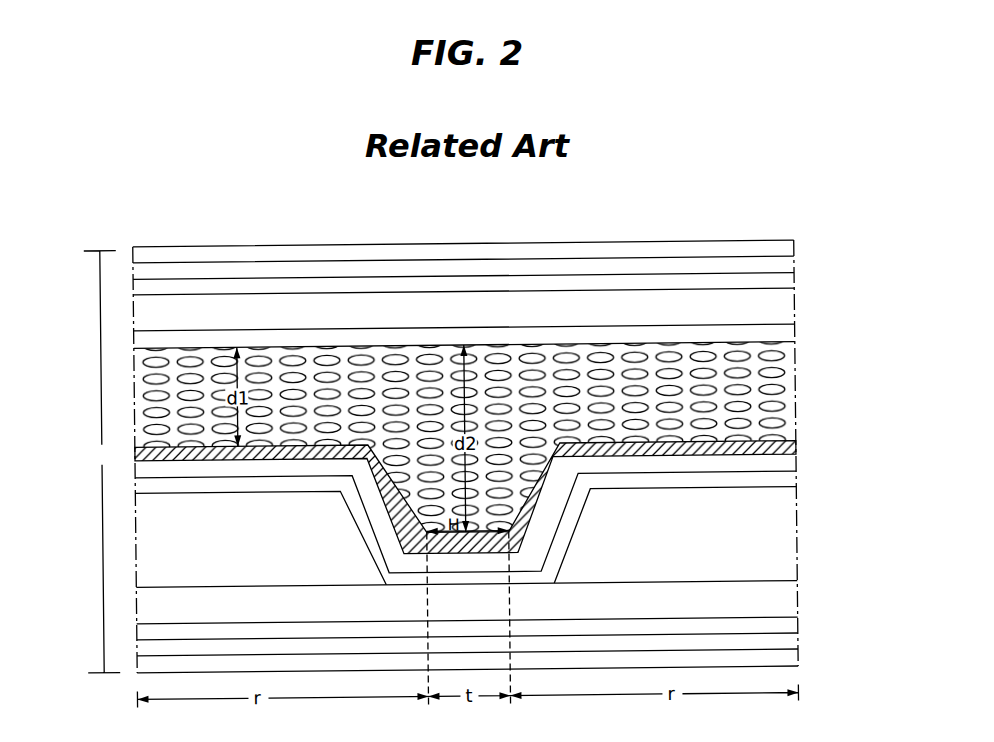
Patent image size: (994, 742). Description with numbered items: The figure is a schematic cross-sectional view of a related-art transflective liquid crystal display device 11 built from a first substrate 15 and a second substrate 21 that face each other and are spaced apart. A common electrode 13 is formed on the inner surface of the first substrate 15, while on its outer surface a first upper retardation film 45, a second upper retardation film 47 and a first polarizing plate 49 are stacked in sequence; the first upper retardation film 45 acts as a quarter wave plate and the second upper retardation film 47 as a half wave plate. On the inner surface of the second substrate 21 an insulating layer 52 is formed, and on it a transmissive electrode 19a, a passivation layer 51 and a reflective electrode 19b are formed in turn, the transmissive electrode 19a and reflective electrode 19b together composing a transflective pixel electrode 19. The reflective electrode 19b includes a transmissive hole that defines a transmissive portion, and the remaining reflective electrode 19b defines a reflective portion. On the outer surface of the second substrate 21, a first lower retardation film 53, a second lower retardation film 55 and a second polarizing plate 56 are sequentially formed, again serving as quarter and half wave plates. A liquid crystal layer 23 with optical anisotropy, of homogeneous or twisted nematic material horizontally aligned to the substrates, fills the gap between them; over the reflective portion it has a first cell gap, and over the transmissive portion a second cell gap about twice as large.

The transflective liquid crystal display device 11 is at (102, 462).
The common electrode 13 is at (788, 335).
The first substrate 15 is at (788, 312).
The first upper retardation film 45 is at (788, 285).
The second upper retardation film 47 is at (788, 267).
The first polarizing plate 49 is at (788, 248).
The liquid crystal layer 23 is at (786, 374).
The transflective pixel electrode 19 is at (518, 511).
The reflective electrode 19b is at (790, 450).
The transmissive electrode 19a is at (788, 482).
The passivation layer 51 is at (143, 468).
The insulating layer 52 is at (788, 557).
The second substrate 21 is at (790, 603).
The first lower retardation film 53 is at (790, 625).
The second lower retardation film 55 is at (790, 645).
The second polarizing plate 56 is at (790, 667).